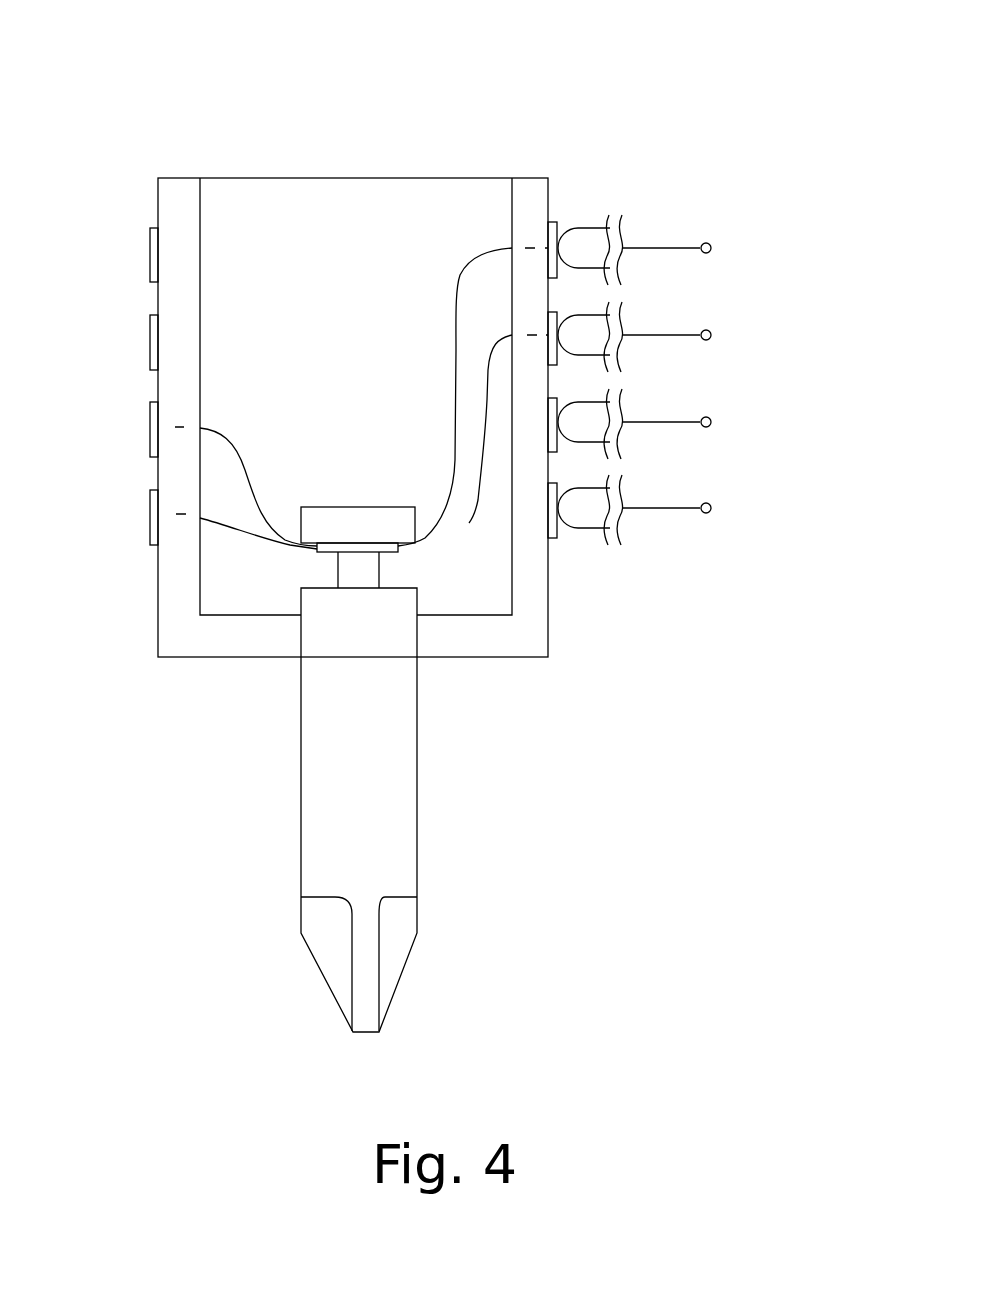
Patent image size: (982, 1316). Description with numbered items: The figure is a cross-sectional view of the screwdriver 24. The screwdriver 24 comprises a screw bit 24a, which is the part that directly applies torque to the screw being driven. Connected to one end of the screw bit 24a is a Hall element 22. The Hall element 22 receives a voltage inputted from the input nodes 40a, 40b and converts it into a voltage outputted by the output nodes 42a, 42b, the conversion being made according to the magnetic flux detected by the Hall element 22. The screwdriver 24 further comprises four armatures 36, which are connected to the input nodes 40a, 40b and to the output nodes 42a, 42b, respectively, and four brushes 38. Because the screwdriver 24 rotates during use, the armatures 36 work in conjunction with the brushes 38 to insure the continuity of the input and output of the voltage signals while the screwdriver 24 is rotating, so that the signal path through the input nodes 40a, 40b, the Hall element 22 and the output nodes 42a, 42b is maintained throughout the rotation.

The screwdriver 24 is at (258, 57).
The screw bit 24a is at (397, 770).
The Hall element 22 is at (357, 507).
The armatures 36 is at (150, 255).
The brushes 38 is at (588, 245).
The input node 40a is at (248, 538).
The input node 40b is at (247, 470).
The output node 42a is at (470, 524).
The output node 42b is at (453, 350).